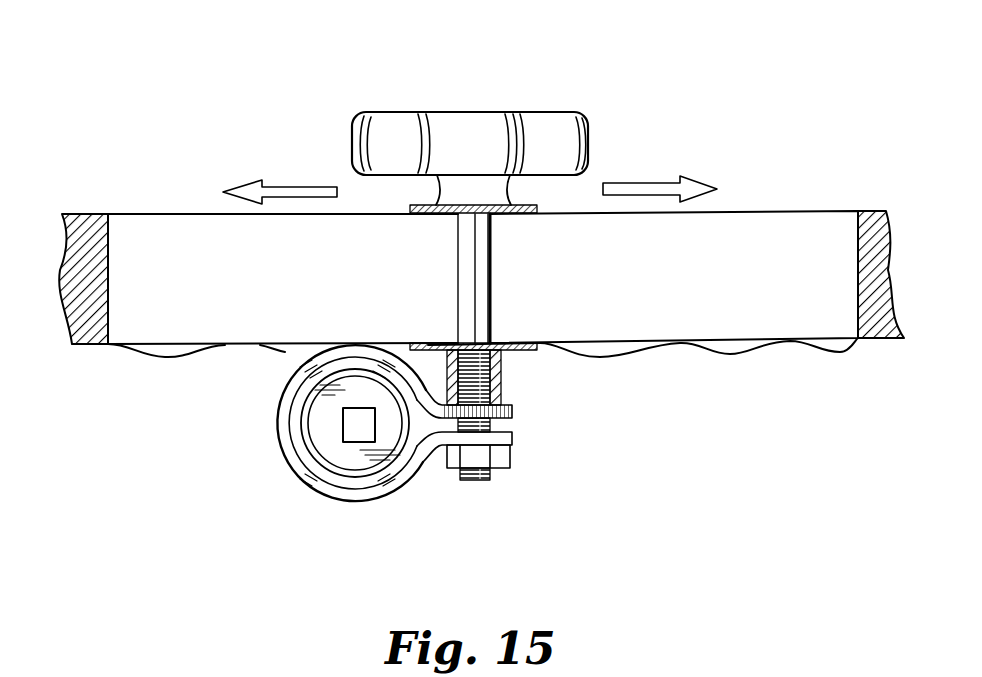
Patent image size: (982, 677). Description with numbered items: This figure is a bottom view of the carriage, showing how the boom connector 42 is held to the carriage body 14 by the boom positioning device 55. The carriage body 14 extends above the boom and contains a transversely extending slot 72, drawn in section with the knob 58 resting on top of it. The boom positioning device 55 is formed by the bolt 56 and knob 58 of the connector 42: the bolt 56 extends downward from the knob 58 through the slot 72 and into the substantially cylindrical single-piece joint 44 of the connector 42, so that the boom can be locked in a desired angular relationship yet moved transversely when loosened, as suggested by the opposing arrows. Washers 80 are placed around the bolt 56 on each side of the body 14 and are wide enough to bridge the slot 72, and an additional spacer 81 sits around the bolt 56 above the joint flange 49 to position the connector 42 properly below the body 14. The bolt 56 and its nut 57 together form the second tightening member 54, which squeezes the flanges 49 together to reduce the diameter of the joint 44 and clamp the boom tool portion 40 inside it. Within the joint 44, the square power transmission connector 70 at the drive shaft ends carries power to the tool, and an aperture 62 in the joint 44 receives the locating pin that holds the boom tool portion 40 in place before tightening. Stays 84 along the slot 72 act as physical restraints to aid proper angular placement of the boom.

The carriage body 14 is at (160, 213).
The slot 72 is at (762, 228).
The boom positioning device 55 is at (420, 305).
The knob 58 is at (580, 112).
The washers 80 is at (533, 207).
The bolt 56 is at (503, 377).
The spacer 81 is at (512, 411).
The flanges 49 is at (512, 438).
The nut 57 is at (510, 466).
The second tightening member 54 is at (500, 491).
The stays 84 is at (703, 348).
The power transmission connector 70 is at (345, 420).
The aperture 62 is at (282, 433).
The boom connector 42 is at (403, 446).
The joint 44 is at (433, 446).
The boom tool portion 40 is at (380, 487).